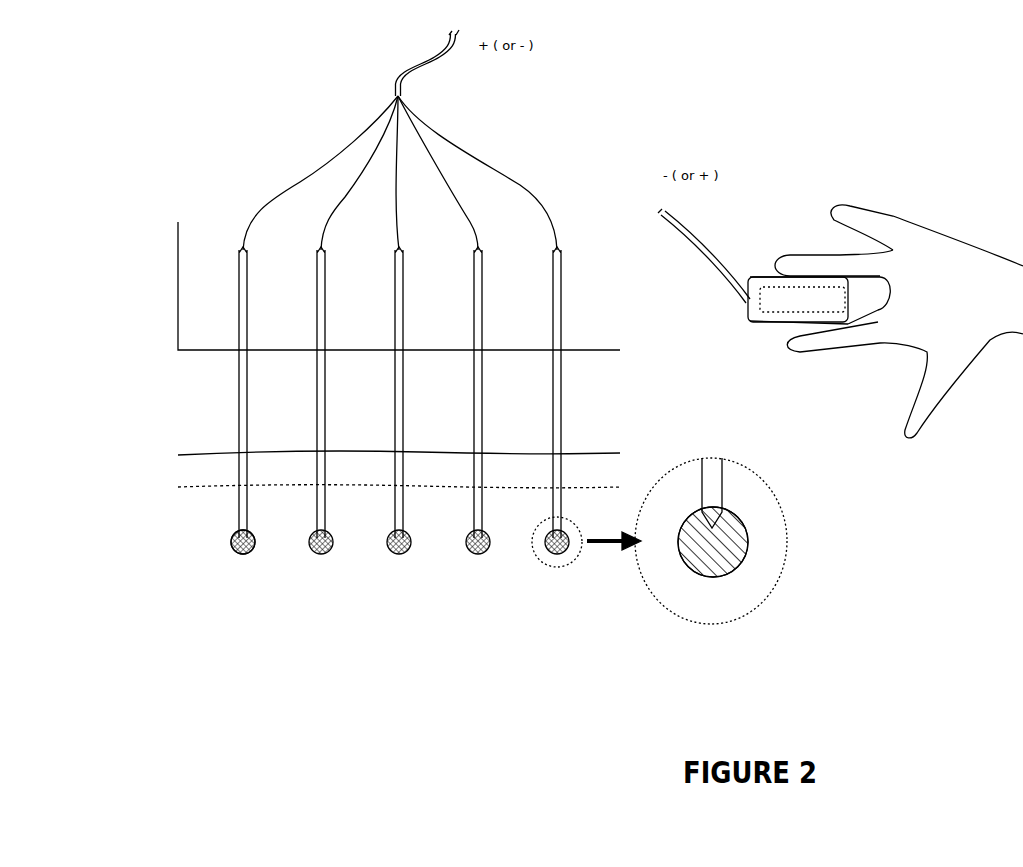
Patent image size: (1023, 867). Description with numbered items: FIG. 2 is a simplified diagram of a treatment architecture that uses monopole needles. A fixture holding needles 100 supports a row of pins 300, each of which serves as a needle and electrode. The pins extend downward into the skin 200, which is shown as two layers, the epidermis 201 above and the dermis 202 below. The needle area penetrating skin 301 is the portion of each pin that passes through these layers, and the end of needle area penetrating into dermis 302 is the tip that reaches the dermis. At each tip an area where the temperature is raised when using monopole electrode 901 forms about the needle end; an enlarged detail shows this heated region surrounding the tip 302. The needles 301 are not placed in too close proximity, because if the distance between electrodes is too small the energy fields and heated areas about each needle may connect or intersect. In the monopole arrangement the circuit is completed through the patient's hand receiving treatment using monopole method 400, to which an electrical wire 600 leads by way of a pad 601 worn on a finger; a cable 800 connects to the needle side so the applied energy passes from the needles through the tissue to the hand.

The fixture holding needles 100 is at (178, 286).
The skin 200 is at (343, 482).
The epidermis 201 is at (188, 470).
The dermis 202 is at (190, 506).
The pin/needle/electrode 300 is at (359, 317).
The needle area penetrating skin 301 is at (240, 465).
The end of needle area penetrating into dermis 302 is at (239, 541).
The patient's hand receiving treatment using monopole method 400 is at (922, 250).
The electrical wire 600 is at (753, 305).
The counter electrode pad 601 is at (750, 324).
The power supply cable 800 is at (415, 60).
The area where the temperature is raised when using monopole electrode 901 is at (250, 550).